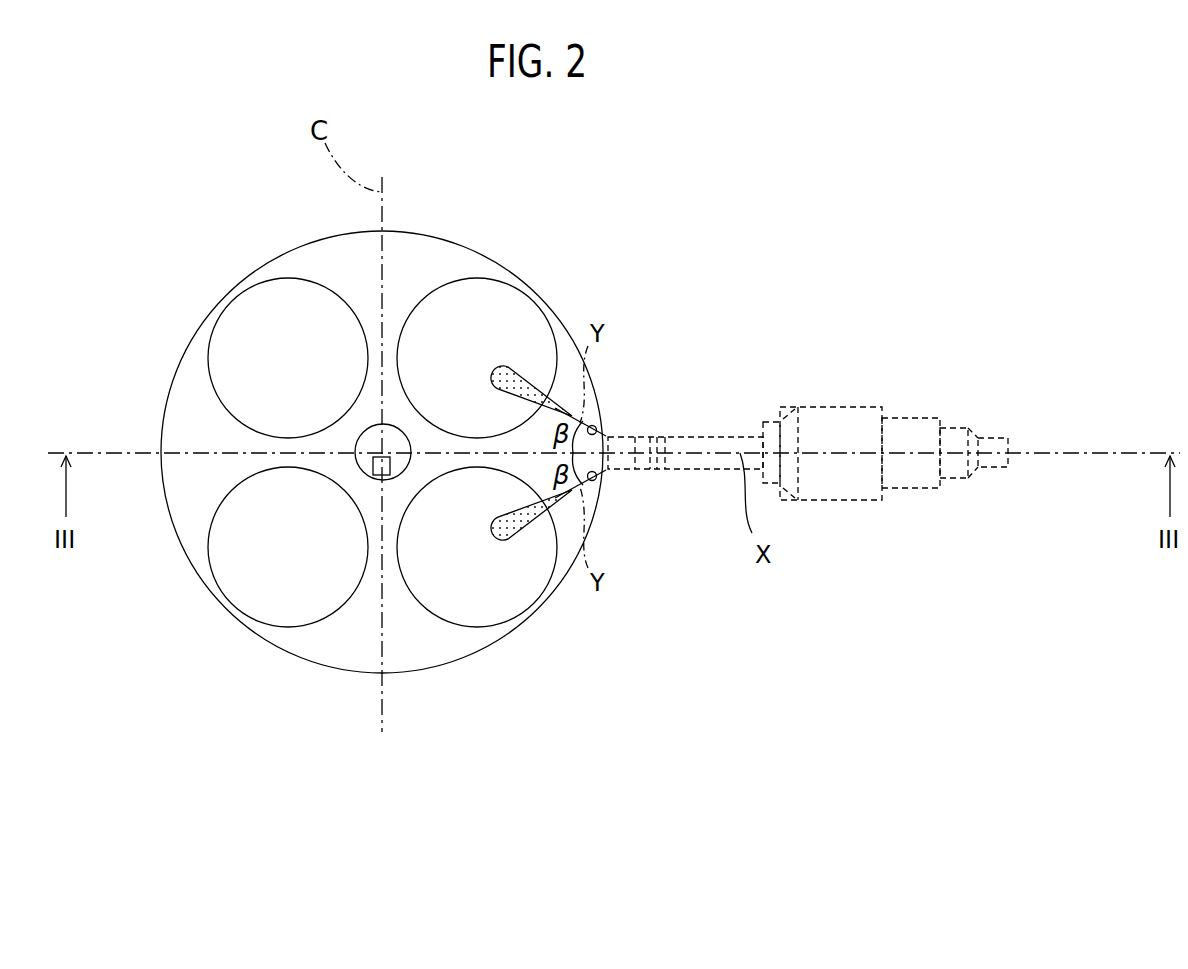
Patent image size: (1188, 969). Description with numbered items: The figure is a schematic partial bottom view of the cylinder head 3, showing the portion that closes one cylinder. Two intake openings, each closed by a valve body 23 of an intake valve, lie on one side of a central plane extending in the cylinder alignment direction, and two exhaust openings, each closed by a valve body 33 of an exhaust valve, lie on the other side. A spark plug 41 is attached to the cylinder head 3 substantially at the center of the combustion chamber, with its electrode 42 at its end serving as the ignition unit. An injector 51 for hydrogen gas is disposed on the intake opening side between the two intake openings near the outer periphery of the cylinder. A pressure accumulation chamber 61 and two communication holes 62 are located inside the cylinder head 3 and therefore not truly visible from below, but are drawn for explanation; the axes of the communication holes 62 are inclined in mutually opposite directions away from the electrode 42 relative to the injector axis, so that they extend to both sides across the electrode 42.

The cylinder head 3 is at (477, 690).
The valve body 23 is at (487, 302).
The valve body 33 is at (288, 300).
The spark plug 41 is at (393, 427).
The electrode 42 is at (392, 480).
The injector 51 is at (853, 415).
The pressure accumulation chamber 61 is at (608, 460).
The communication holes 62 is at (597, 430).